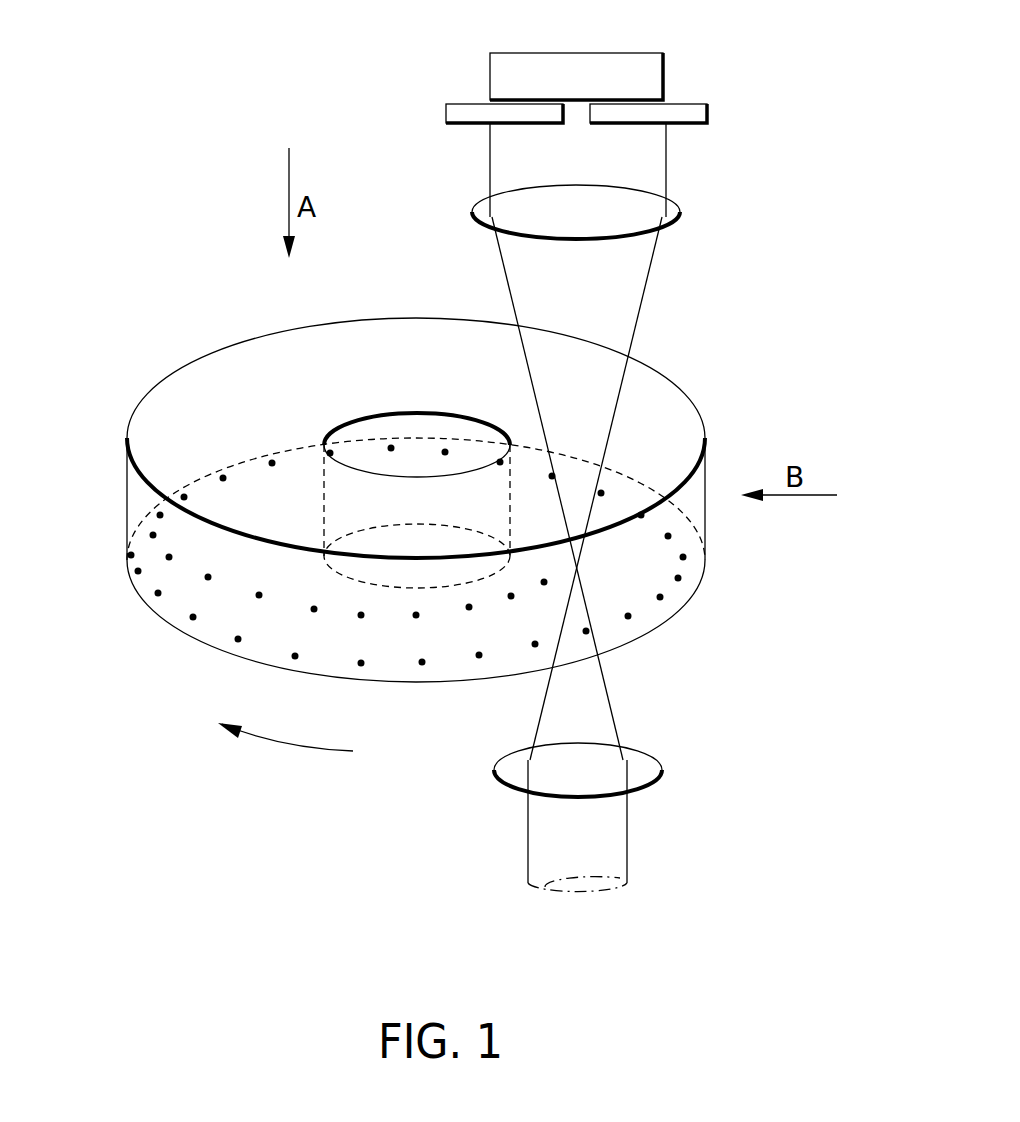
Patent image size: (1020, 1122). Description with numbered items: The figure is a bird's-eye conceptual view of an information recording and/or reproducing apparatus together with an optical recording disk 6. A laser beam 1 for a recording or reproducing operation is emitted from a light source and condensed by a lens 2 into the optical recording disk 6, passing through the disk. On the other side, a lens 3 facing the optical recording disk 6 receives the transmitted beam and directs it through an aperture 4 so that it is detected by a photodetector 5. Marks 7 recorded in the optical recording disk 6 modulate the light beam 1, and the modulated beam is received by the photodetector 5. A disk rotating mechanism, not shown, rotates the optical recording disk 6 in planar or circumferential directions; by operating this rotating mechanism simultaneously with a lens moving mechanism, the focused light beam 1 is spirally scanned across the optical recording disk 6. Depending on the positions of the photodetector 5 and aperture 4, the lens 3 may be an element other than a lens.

The laser beam 1 is at (617, 838).
The lens 2 is at (663, 770).
The lens 3 is at (680, 212).
The aperture 4 is at (707, 108).
The photodetector 5 is at (663, 67).
The optical recording disk 6 is at (683, 412).
The marks 7 is at (683, 557).